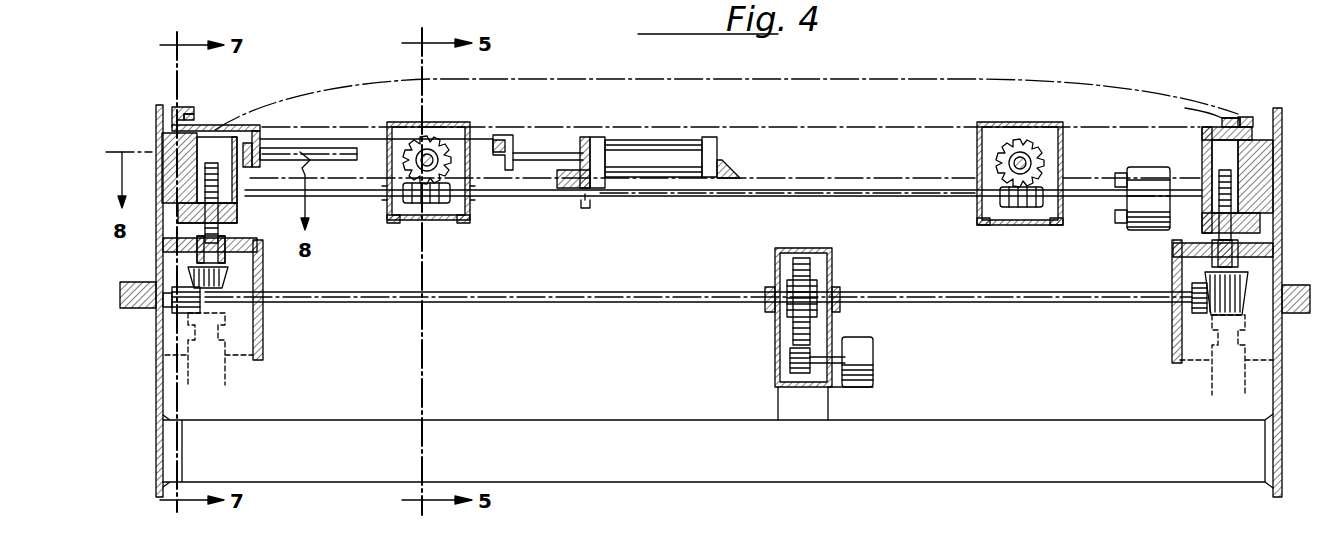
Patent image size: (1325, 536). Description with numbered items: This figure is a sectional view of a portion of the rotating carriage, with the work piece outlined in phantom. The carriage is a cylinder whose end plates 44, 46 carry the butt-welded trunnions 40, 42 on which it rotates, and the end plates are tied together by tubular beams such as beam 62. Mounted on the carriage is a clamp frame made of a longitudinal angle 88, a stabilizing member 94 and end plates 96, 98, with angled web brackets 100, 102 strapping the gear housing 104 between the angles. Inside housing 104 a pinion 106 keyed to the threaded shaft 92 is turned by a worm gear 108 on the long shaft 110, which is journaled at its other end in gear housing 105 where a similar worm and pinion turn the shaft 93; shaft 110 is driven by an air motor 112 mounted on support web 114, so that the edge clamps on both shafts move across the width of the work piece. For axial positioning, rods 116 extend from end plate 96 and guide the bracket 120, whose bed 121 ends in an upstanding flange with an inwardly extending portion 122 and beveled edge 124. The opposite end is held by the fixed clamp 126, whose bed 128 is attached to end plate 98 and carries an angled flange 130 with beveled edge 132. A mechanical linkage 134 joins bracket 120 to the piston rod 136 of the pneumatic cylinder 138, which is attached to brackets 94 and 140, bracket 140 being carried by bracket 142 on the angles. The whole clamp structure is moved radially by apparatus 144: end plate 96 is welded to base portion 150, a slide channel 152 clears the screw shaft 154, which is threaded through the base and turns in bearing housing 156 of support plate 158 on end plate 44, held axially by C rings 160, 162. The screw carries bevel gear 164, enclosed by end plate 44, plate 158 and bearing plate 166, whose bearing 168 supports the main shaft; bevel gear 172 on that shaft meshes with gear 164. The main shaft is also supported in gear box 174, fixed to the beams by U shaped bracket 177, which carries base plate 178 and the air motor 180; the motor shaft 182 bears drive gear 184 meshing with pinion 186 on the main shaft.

The trunnion 40 is at (120, 295).
The trunnion 42 is at (1296, 313).
The end plate 44 is at (156, 378).
The end plate 46 is at (1276, 240).
The tubular beam 62 is at (572, 430).
The angle bracket 88 is at (350, 200).
The threaded shaft 92 is at (430, 152).
The shaft 93 is at (1010, 163).
The stabilizing member 94 is at (724, 176).
The end plate 96 is at (237, 188).
The end plate 98 is at (1205, 165).
The angled web bracket 100 is at (393, 223).
The angled web bracket 102 is at (462, 223).
The gear housing 104 is at (405, 122).
The gear housing 105 is at (1018, 122).
The pinion 106 is at (445, 150).
The worm gear 108 is at (420, 205).
The shaft 110 is at (668, 196).
The air motor 112 is at (1140, 185).
The support web 114 is at (1118, 218).
The rod 116 is at (320, 148).
The bracket 120 is at (248, 116).
The bed 121 is at (218, 125).
The inwardly extending portion 122 is at (182, 104).
The beveled edge 124 is at (198, 106).
The clamp 126 is at (1226, 106).
The bed portion 128 is at (1212, 126).
The angled flange 130 is at (1250, 115).
The beveled edge 132 is at (1185, 108).
The mechanical linkage 134 is at (346, 138).
The piston rod 136 is at (553, 152).
The pneumatic piston and cylinder 138 is at (668, 132).
The mounting bracket 140 is at (560, 175).
The bracket 142 is at (585, 210).
The apparatus 144 is at (148, 245).
The base portion 150 is at (237, 213).
The longitudinal channel 152 is at (205, 150).
The screw shaft 154 is at (213, 170).
The bearing housing 156 is at (140, 308).
The support plate 158 is at (177, 246).
The C ring 160 is at (225, 263).
The C ring 162 is at (225, 246).
The bevel gear 164 is at (226, 284).
The bearing plate 166 is at (263, 352).
The bearing 168 is at (263, 305).
The bevel gear 172 is at (180, 314).
The gear box 174 is at (832, 265).
The U shaped bracket 177 is at (780, 405).
The base plate 178 is at (862, 387).
The air motor 180 is at (852, 355).
The shaft 182 is at (824, 352).
The drive gear 184 is at (795, 360).
The pinion 186 is at (800, 258).